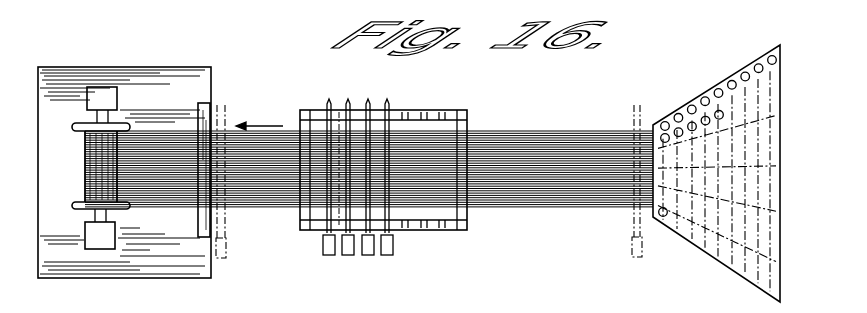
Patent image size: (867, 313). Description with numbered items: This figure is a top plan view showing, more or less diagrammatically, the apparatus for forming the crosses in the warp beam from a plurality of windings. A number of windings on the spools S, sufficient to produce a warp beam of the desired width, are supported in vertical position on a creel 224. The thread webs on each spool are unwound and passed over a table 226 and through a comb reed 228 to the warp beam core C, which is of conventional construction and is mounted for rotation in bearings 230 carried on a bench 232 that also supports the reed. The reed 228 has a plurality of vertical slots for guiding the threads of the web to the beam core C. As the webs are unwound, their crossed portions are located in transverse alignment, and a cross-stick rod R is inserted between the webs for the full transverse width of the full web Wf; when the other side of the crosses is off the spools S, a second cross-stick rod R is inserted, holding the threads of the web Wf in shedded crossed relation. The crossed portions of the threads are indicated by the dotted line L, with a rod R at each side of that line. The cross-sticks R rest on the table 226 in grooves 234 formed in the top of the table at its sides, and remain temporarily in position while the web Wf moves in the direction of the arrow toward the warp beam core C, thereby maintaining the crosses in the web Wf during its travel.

The creel 224 is at (708, 254).
The table 226 is at (458, 225).
The comb reed 228 is at (205, 110).
The bearings 230 is at (95, 242).
The bench 232 is at (183, 73).
The grooves 234 is at (423, 229).
The warp beam core C is at (92, 178).
The dotted line L is at (337, 113).
The cross-stick rod R is at (362, 272).
The spools S is at (697, 294).
The full web Wf is at (505, 130).